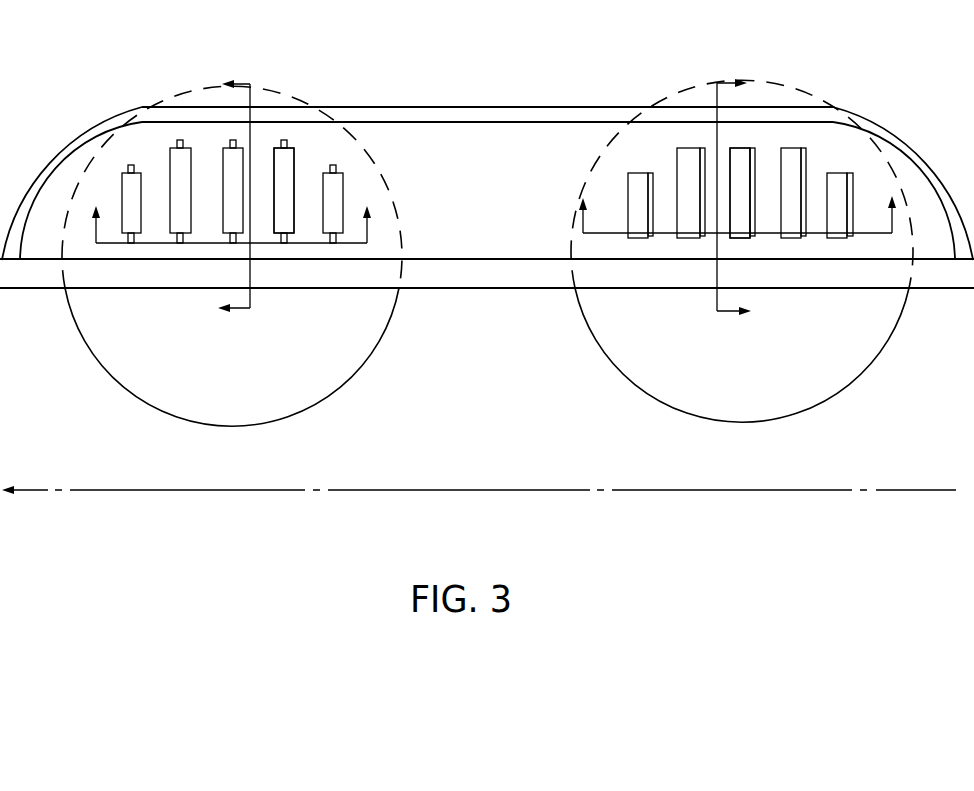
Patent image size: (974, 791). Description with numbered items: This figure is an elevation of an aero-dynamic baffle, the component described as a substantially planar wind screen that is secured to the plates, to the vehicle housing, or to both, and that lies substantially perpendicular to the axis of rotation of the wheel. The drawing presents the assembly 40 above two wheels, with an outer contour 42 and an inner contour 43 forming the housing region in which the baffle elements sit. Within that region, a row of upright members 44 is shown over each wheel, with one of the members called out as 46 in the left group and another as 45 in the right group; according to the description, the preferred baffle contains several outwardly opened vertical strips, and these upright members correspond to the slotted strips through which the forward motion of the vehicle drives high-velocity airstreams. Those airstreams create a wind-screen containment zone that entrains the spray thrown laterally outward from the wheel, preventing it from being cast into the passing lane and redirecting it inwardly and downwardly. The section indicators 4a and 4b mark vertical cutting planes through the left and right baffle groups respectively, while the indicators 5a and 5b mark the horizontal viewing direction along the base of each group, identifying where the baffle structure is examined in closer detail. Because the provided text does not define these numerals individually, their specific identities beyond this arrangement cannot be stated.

The vehicle body 40 is at (602, 107).
The outer shell 42 is at (137, 106).
The inner wall 43 is at (212, 128).
The lamp 44 is at (231, 155).
The flat lamp 45 is at (749, 149).
The tubular lamp 46 is at (284, 147).
The section line 4a- 4a is at (237, 196).
The section line 4b- 4b is at (714, 192).
The section line 5a- 5a is at (226, 213).
The section line 5b- 5b is at (735, 226).